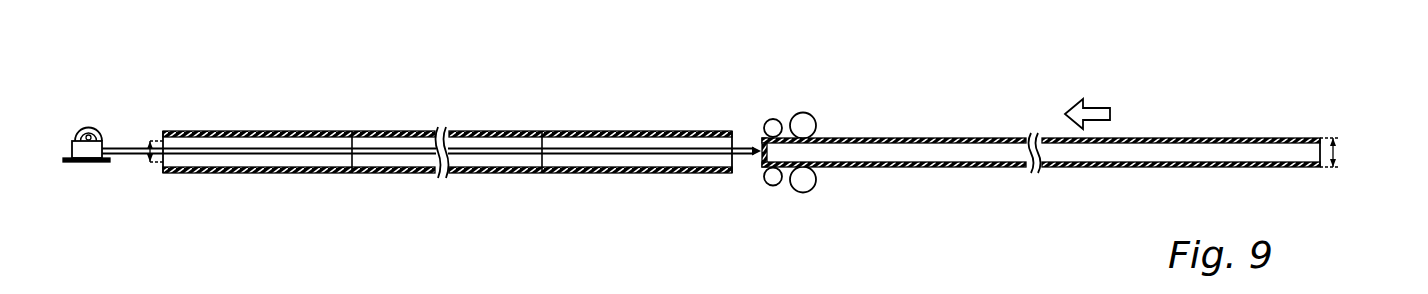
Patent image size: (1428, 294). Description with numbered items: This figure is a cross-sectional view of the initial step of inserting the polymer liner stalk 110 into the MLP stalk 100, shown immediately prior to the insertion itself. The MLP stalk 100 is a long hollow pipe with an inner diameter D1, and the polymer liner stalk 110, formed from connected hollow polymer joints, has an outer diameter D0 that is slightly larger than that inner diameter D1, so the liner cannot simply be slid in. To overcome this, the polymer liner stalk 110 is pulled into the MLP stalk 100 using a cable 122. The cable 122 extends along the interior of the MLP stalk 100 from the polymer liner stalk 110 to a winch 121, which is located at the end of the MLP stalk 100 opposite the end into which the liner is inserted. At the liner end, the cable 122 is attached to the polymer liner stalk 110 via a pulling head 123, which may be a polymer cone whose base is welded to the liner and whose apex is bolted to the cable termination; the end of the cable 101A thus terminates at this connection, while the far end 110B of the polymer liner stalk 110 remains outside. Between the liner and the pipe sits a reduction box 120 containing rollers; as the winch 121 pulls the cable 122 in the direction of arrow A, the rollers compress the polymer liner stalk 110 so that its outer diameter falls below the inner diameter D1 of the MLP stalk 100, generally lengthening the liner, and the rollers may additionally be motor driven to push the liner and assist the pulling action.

The MLP stalk 100 is at (481, 127).
The cable end 101A is at (757, 142).
The polymer liner stalk 110 is at (1153, 137).
The tube end 110B is at (1324, 138).
The reduction box 120 is at (782, 114).
The winch 121 is at (81, 121).
The cable 122 is at (267, 151).
The pulling head 123 is at (757, 163).
The outer diameter D0 is at (1340, 152).
The inner diameter D1 is at (150, 158).
The arrow A is at (1068, 114).